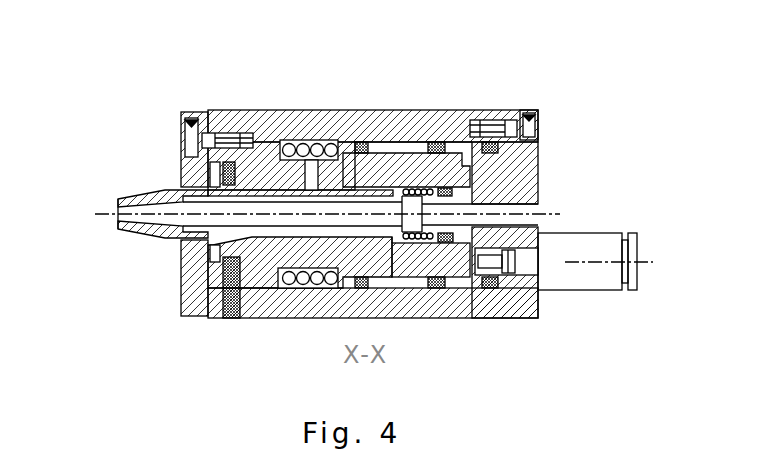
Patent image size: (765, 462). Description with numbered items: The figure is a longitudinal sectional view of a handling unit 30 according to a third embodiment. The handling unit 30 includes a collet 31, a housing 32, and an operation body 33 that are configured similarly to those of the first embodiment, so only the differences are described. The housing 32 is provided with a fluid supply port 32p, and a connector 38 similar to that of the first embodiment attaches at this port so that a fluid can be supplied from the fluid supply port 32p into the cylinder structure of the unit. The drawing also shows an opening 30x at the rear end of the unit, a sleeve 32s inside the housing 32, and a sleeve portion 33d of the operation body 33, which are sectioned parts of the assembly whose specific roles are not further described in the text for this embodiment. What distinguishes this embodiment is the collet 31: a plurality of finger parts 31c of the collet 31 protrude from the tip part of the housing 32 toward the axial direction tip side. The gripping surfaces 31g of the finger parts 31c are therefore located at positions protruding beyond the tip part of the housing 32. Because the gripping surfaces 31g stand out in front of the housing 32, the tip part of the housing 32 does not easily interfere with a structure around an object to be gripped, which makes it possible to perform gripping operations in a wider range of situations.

The handling unit 30 is at (372, 23).
The bore opening 30x is at (540, 213).
The collet 31 is at (297, 164).
The finger parts 31c is at (138, 199).
The gripping surfaces 31g is at (122, 219).
The housing 32 is at (302, 318).
The lower sleeve 32s is at (468, 280).
The fluid supply port 32p is at (512, 268).
The operation body 33 is at (402, 120).
The inner sleeve 33d is at (465, 163).
The connector 38 is at (580, 288).